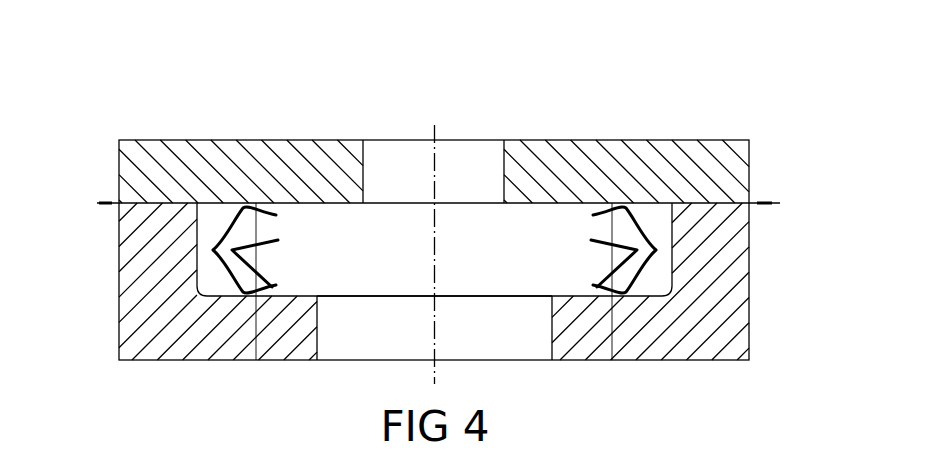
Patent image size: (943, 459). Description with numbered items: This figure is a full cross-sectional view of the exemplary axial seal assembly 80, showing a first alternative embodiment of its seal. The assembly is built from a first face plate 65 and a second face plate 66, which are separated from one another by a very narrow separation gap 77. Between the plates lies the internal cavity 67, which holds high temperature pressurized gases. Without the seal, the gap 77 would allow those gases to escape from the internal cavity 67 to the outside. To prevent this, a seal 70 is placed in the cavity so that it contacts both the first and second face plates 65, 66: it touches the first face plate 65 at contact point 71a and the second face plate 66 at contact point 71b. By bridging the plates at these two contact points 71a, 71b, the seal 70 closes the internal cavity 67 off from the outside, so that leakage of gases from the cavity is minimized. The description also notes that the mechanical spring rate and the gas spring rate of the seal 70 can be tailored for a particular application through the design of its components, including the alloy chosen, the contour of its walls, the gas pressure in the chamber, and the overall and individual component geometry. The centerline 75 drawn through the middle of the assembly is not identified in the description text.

The first face plate 65 is at (202, 350).
The second face plate 66 is at (271, 150).
The internal cavity 67 is at (404, 252).
The seal 70 is at (275, 240).
The contact point 71a is at (256, 360).
The contact point 71b is at (256, 203).
The centerline 75 is at (441, 160).
The separation gap 77 is at (97, 203).
The axial seal assembly 80 is at (593, 90).